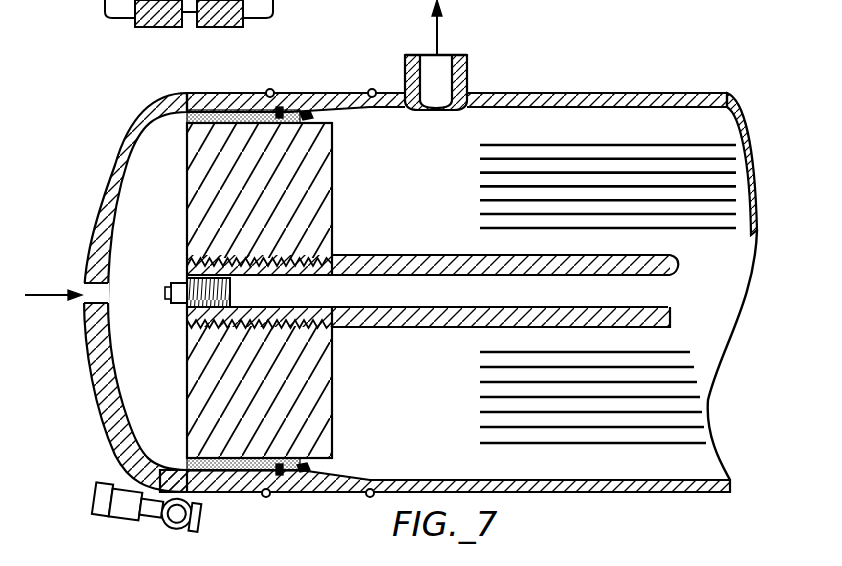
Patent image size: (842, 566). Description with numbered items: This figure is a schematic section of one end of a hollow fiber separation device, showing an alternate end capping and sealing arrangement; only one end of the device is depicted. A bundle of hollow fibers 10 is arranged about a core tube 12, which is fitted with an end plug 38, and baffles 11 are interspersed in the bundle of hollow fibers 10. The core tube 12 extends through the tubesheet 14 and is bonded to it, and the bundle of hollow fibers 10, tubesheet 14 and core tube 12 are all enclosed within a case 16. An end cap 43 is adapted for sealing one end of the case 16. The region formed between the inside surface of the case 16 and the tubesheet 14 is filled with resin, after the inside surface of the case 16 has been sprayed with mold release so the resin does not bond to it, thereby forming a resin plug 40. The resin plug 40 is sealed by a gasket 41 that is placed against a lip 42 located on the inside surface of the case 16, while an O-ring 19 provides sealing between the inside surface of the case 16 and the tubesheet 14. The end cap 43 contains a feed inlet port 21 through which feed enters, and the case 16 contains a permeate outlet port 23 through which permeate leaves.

The bundle of hollow fibers 10 is at (440, 147).
The baffles 11 is at (734, 172).
The core tube 12 is at (665, 293).
The tubesheet 14 is at (334, 192).
The case 16 is at (622, 96).
The O-ring 19 is at (301, 112).
The feed inlet port 21 is at (88, 290).
The permeate outlet port 23 is at (438, 68).
The end plug 38 is at (187, 306).
The resin plug 40 is at (240, 108).
The gasket 41 is at (265, 105).
The lip 42 is at (283, 107).
The end cap 43 is at (115, 140).